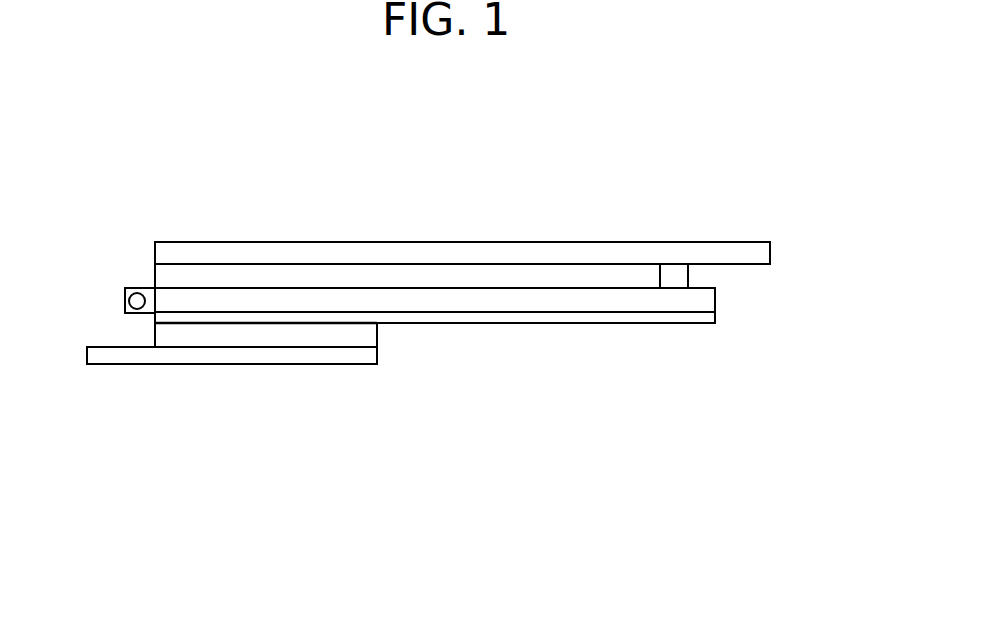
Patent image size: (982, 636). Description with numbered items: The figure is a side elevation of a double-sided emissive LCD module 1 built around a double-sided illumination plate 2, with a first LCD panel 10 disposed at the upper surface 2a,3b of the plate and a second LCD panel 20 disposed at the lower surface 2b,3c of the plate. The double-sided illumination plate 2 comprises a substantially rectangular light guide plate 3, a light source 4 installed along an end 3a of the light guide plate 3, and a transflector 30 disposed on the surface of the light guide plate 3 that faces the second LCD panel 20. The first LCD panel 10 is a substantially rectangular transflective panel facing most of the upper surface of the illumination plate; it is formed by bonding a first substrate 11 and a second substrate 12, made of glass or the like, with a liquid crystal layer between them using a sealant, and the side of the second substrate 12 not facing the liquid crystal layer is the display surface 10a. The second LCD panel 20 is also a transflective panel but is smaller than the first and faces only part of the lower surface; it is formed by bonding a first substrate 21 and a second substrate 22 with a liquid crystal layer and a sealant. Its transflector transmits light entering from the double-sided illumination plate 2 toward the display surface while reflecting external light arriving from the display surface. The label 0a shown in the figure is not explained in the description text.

The double-sided emissive LCD module 1 is at (773, 200).
The first LCD panel 10 is at (603, 225).
The display surface 10a is at (363, 242).
The first substrate 11 is at (443, 278).
The second substrate 12 is at (528, 255).
The upper surface of the double-sided illumination plate 2a,3b is at (688, 283).
The double-sided illumination plate 2 is at (740, 302).
The light guide plate 3 is at (667, 303).
The lower surface of the double-sided illumination plate 2b,3c is at (552, 323).
The transflector 30 is at (185, 320).
The light source 4 is at (130, 288).
The end of the light guide plate 3a is at (148, 290).
The second LCD panel 20 is at (319, 377).
The first substrate 21 is at (365, 333).
The second substrate 22 is at (375, 357).
The lower surface of lower substrate 0a is at (227, 367).